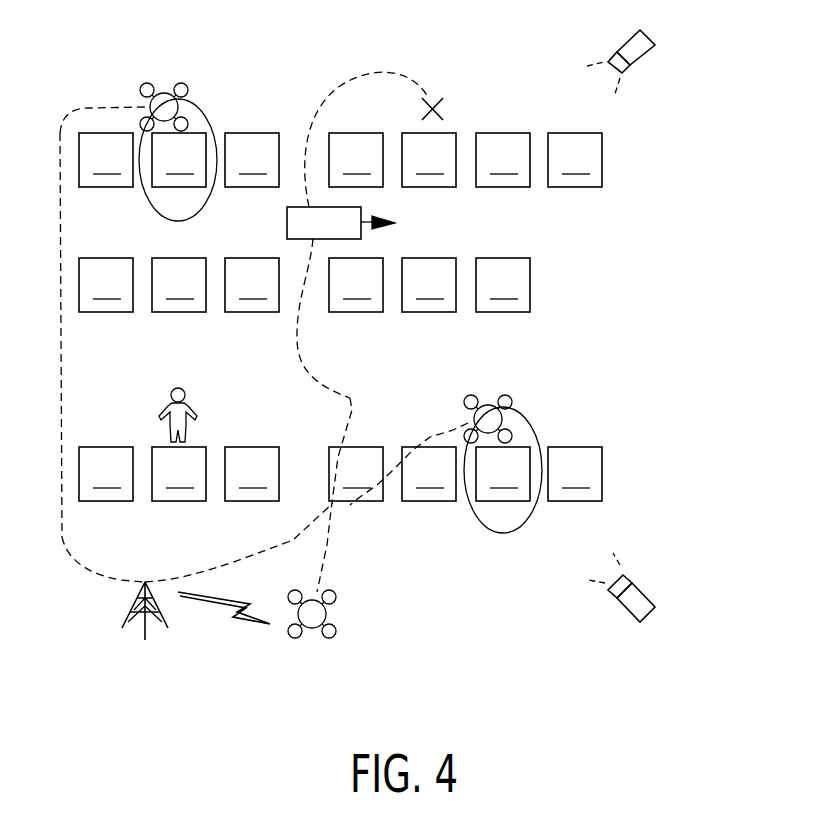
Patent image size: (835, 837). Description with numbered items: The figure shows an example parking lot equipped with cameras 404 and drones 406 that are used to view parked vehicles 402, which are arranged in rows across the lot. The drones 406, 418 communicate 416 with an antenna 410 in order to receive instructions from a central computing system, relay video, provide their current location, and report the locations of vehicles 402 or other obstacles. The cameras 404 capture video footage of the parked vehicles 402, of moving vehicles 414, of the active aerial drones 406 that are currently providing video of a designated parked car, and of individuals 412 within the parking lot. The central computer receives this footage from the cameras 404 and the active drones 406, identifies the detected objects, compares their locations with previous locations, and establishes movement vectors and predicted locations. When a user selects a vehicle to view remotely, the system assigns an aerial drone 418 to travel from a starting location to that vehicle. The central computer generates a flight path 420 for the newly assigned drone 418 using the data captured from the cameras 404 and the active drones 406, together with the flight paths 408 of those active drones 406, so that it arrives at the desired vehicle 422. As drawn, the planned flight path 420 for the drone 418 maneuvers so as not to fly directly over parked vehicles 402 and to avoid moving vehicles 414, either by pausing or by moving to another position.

The parked vehicles 402 is at (341, 317).
The cameras 404 is at (655, 45).
The drones 406 is at (177, 96).
The flight paths 408 is at (203, 110).
The antenna 410 is at (137, 623).
The individuals 412 is at (197, 415).
The moving vehicles 414 is at (361, 232).
The communication 416 is at (350, 510).
The aerial drone 418 is at (330, 612).
The flight path 420 is at (350, 398).
The desired vehicle 422 is at (438, 100).